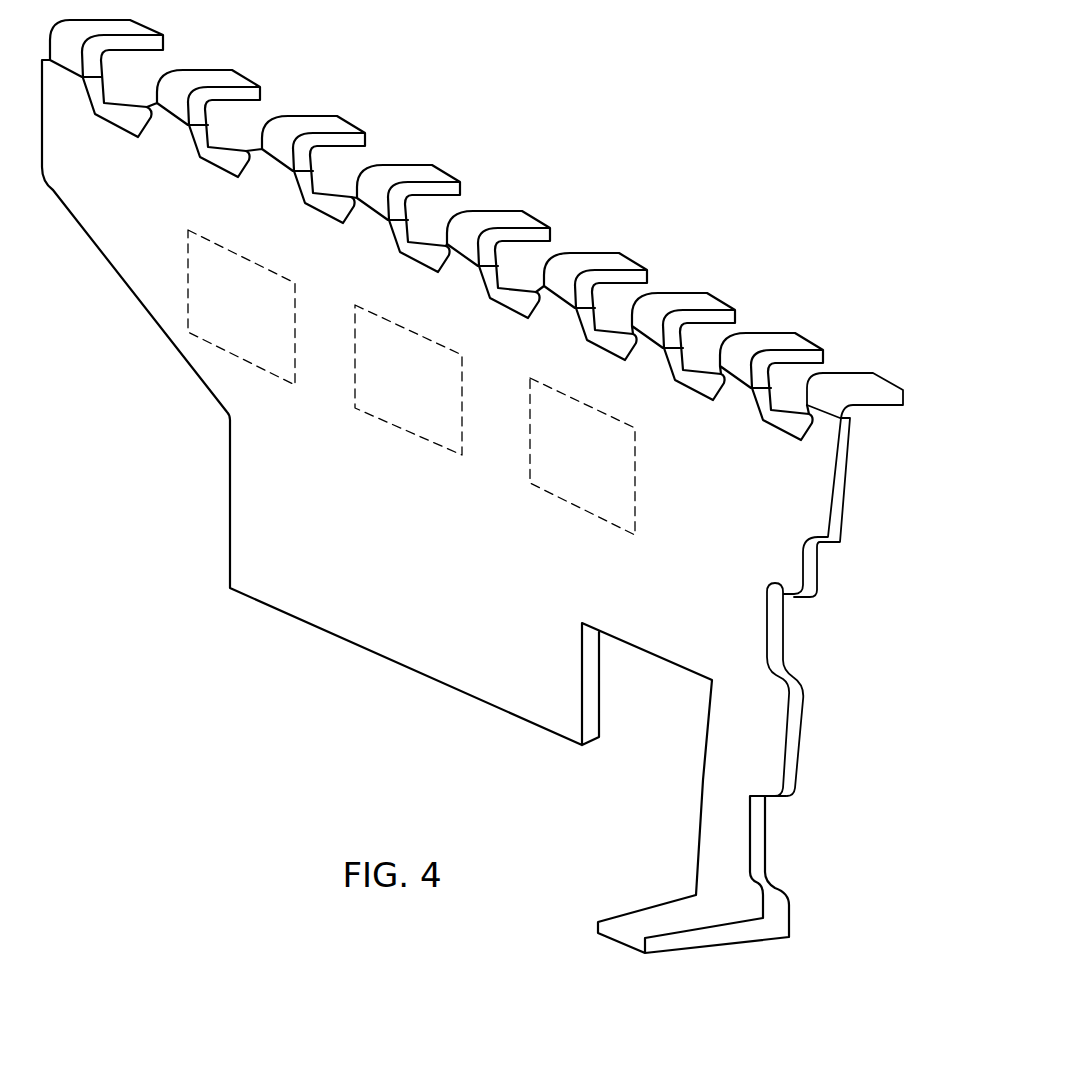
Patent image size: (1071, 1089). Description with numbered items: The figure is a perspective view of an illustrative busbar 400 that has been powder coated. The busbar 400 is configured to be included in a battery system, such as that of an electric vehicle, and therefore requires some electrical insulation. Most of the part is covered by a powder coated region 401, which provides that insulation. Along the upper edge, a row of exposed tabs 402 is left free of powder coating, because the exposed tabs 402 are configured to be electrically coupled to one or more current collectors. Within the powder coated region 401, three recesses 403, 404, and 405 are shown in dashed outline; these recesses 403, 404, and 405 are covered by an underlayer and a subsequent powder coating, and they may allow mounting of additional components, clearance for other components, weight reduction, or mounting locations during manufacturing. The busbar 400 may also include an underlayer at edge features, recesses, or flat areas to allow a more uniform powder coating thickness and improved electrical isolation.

The busbar 400 is at (731, 89).
The powder coated region 401 is at (321, 576).
The exposed tabs 402 is at (428, 160).
The recess 403 is at (261, 307).
The recess 404 is at (431, 384).
The recess 405 is at (604, 458).